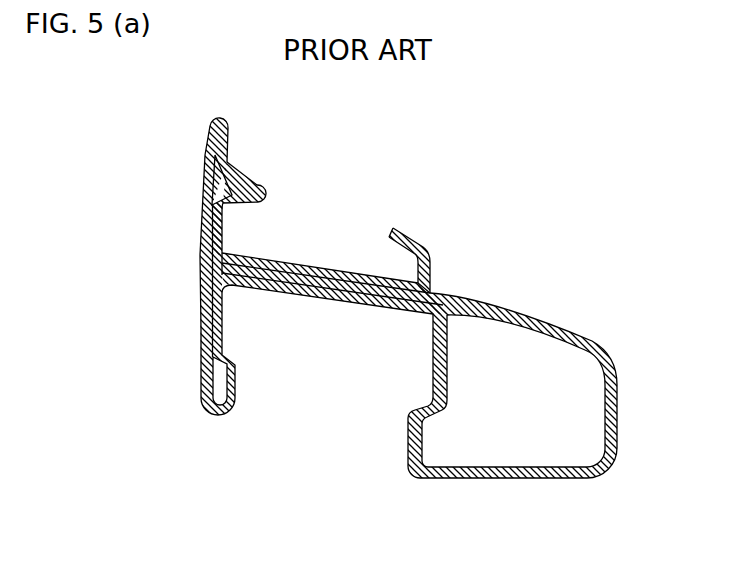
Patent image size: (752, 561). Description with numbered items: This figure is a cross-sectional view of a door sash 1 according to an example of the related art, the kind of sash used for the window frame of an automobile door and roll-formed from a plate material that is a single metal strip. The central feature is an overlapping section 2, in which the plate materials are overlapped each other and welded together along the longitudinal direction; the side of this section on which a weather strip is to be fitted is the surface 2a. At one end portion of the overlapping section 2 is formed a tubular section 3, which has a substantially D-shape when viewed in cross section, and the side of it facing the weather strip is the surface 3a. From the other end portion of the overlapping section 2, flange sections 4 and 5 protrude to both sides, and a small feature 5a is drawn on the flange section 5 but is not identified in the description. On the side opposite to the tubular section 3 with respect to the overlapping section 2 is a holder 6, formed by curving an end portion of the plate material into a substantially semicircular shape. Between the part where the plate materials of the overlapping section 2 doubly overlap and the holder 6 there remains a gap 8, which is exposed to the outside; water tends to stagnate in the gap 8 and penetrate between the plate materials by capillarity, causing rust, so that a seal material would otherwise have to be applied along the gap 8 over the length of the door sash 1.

The door sash 1 is at (537, 322).
The overlapping section 2 is at (290, 262).
The surface of the overlapping section 2a is at (357, 277).
The tubular section 3 is at (617, 418).
The surface of the tubular section 3a is at (517, 312).
The flange section 4 is at (200, 342).
The flange section 5 is at (207, 160).
The projection of upper lip 5a is at (247, 181).
The holder 6 is at (408, 240).
The gap 8 is at (427, 290).